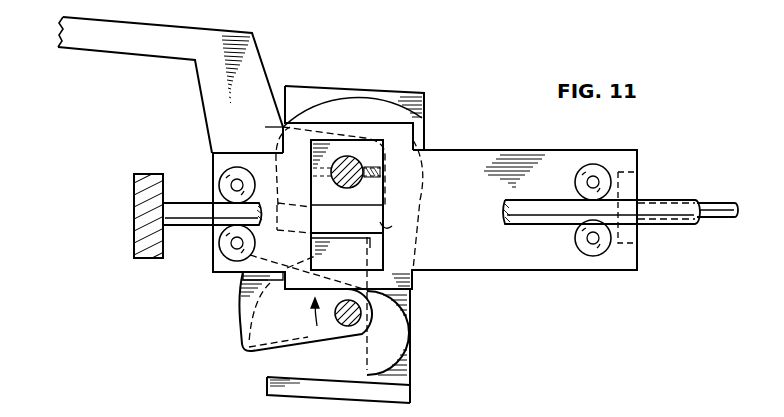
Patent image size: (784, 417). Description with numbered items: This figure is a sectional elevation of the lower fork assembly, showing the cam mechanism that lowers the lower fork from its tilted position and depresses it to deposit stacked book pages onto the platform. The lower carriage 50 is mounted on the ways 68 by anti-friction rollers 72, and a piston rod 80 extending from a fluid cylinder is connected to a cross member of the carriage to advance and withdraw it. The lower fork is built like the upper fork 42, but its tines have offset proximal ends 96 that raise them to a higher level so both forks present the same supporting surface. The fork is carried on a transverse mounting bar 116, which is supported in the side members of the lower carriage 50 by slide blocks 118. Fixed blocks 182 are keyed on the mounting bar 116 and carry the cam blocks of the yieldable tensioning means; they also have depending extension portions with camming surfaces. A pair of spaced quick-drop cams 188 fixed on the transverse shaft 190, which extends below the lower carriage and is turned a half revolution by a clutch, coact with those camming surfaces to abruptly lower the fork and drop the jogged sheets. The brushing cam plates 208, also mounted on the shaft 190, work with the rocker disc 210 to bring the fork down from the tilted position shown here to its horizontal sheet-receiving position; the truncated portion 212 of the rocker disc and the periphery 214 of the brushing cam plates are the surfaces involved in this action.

The upper fork 42 is at (264, 56).
The lower carriage 50 is at (484, 149).
The ways 68 is at (549, 212).
The anti-friction rollers 72 is at (589, 255).
The piston rod 80 is at (718, 205).
The offset proximal ends 96 is at (222, 122).
The transverse mounting bar 116 is at (350, 157).
The slide blocks 118 is at (322, 150).
The fixed blocks 182 is at (426, 111).
The quick-drop cams 188 is at (397, 320).
The transverse shaft 190 is at (318, 343).
The brushing cam plates 208 is at (255, 352).
The rocker disc 210 is at (385, 107).
The truncated portion 212 is at (392, 226).
The periphery 214 is at (237, 305).